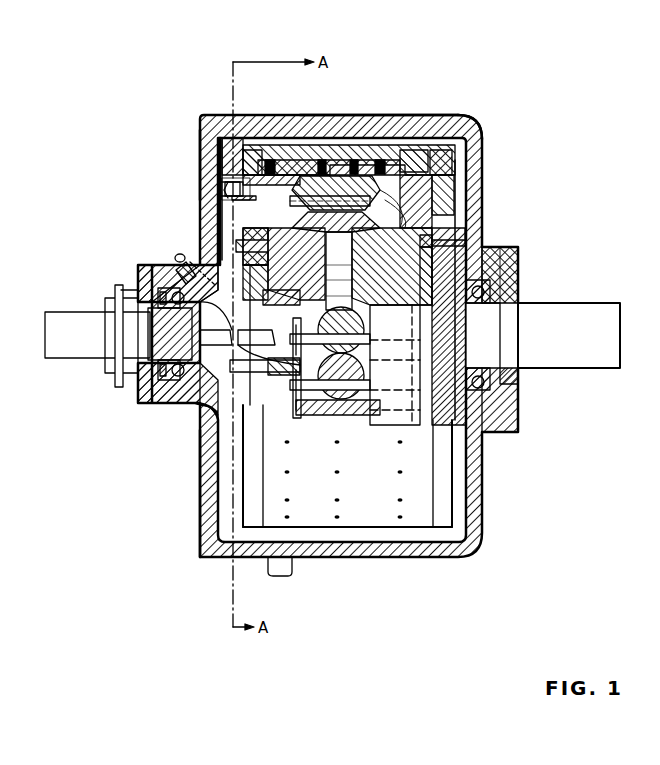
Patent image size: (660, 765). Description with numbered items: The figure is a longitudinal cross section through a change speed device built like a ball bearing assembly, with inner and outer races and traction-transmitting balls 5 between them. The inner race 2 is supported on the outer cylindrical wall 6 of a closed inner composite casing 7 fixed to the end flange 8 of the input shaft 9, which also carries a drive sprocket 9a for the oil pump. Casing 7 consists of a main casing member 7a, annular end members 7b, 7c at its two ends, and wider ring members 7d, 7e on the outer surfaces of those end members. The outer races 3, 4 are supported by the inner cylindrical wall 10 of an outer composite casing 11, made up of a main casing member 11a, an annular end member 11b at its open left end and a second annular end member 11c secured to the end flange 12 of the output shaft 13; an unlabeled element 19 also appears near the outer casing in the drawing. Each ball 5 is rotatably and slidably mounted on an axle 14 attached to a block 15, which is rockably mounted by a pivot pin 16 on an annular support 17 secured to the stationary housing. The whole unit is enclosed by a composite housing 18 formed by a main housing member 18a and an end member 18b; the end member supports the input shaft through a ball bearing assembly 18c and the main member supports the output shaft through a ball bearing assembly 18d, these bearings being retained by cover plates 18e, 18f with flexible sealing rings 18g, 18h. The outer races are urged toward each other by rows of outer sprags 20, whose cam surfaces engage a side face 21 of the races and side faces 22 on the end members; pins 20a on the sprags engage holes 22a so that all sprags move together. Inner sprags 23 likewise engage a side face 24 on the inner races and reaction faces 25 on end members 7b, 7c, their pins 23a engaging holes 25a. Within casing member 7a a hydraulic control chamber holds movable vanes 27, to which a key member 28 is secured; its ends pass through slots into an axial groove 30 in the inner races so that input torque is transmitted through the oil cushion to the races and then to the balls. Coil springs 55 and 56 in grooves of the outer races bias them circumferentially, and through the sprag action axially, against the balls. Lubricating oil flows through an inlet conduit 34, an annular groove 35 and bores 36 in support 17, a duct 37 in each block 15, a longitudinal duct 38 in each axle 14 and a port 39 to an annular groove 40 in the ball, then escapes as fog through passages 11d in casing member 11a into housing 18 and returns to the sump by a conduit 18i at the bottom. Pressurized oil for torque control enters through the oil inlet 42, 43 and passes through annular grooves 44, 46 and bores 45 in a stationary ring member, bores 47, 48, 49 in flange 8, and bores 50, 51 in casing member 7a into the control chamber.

The inner race 2 is at (336, 261).
The outer race 3 is at (336, 192).
The outer race 4 is at (455, 192).
The traction-transmitting ball 5 is at (372, 200).
The outer cylindrical wall 6 is at (392, 266).
The inner composite casing 7 is at (250, 245).
The main casing member 7a is at (250, 258).
The annular end member 7b is at (236, 246).
The annular end member 7c is at (440, 320).
The ring member 7d is at (250, 231).
The ring member 7e is at (462, 232).
The end flange 8 is at (283, 270).
The input shaft 9 is at (175, 340).
The drive sprocket 9a is at (117, 288).
The inner cylindrical wall 10 is at (455, 188).
The outer composite casing 11 is at (313, 155).
The main casing member 11a is at (465, 124).
The annular end member 11b is at (221, 145).
The annular end member 11c is at (470, 165).
The passage 11d is at (440, 140).
The end flange 12 is at (505, 250).
The output shaft 13 is at (543, 335).
The axle 14 is at (352, 405).
The block 15 is at (225, 165).
The pivot pin 16 is at (208, 430).
The annular support 17 is at (245, 165).
The composite housing 18 is at (225, 116).
The main housing member 18a is at (392, 116).
The end member 18b is at (210, 150).
The ball bearing assembly 18c is at (180, 392).
The ball bearing assembly 18d is at (490, 420).
The cover plate 18e is at (138, 270).
The cover plate 18f is at (518, 262).
The flexible sealing ring 18g is at (142, 375).
The flexible sealing ring 18h is at (512, 380).
The conduit 18i is at (277, 572).
The spacer ring 19 is at (440, 212).
The outer sprag 20 is at (278, 160).
The pin 20a is at (405, 160).
The side face 21 is at (272, 162).
The side face 22 is at (270, 162).
The hole 22a is at (455, 170).
The inner sprag 23 is at (544, 236).
The pin 23a is at (440, 236).
The side face 24 is at (339, 270).
The reaction face 25 is at (445, 250).
The hole 25a is at (540, 234).
The movable vane 27 is at (339, 284).
The key member 28 is at (339, 298).
The axial groove 30 is at (339, 271).
The inlet conduit 34 is at (225, 204).
The annular groove 35 is at (230, 192).
The bore 36 is at (215, 185).
The duct 37 is at (235, 200).
The longitudinal duct 38 is at (350, 412).
The port 39 is at (338, 410).
The annular groove 40 is at (327, 415).
The oil inlet 42 is at (178, 256).
The oil inlet 43 is at (183, 264).
The annular groove 44 is at (181, 256).
The bore 45 is at (118, 291).
The annular groove 46 is at (182, 308).
The bore 47 is at (190, 322).
The bore 48 is at (216, 323).
The bore 49 is at (255, 282).
The bore 50 is at (269, 347).
The bore 51 is at (265, 358).
The coil spring 55 is at (322, 160).
The coil spring 56 is at (354, 160).